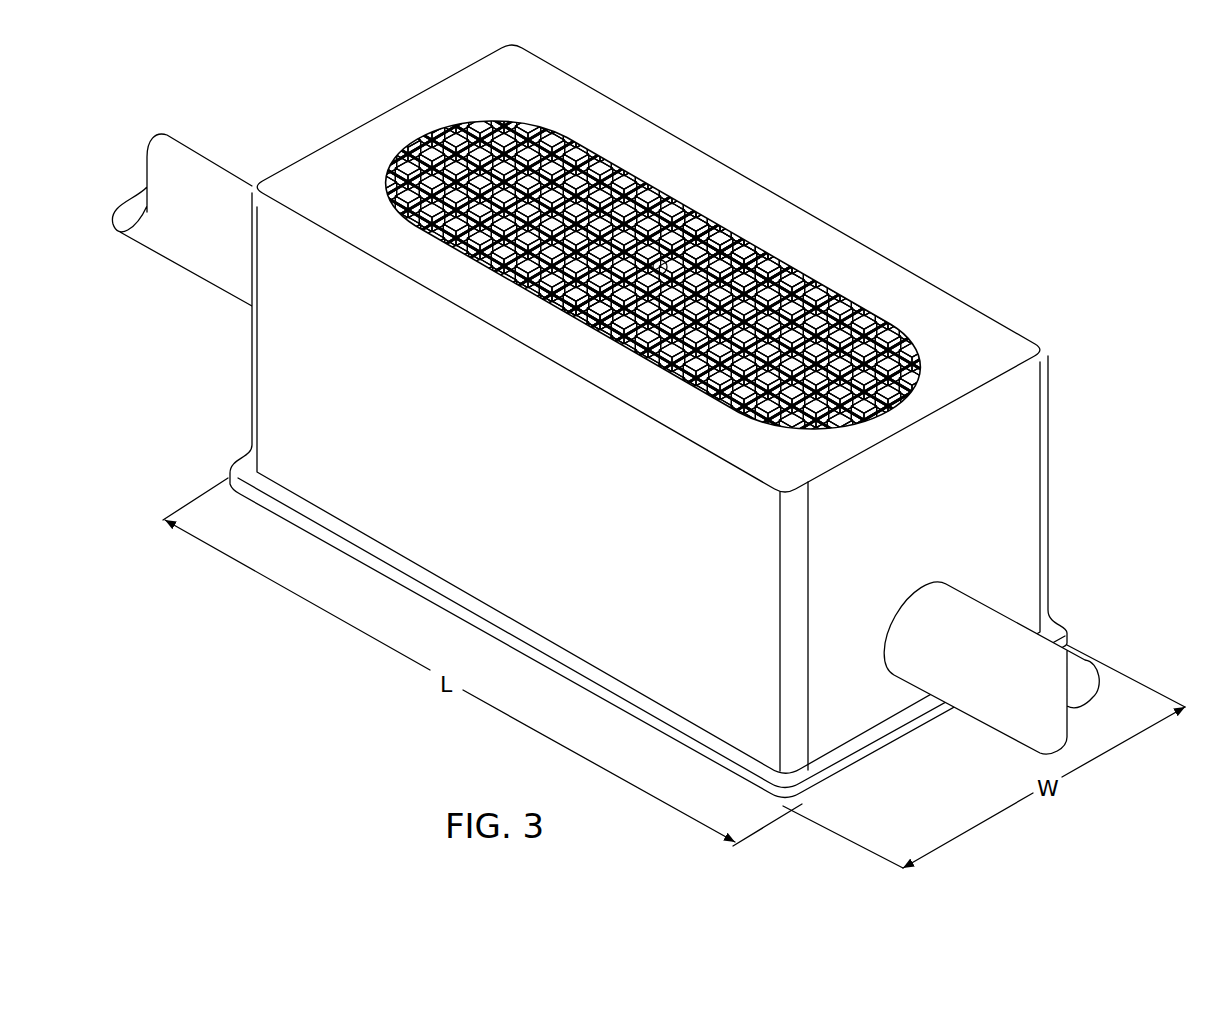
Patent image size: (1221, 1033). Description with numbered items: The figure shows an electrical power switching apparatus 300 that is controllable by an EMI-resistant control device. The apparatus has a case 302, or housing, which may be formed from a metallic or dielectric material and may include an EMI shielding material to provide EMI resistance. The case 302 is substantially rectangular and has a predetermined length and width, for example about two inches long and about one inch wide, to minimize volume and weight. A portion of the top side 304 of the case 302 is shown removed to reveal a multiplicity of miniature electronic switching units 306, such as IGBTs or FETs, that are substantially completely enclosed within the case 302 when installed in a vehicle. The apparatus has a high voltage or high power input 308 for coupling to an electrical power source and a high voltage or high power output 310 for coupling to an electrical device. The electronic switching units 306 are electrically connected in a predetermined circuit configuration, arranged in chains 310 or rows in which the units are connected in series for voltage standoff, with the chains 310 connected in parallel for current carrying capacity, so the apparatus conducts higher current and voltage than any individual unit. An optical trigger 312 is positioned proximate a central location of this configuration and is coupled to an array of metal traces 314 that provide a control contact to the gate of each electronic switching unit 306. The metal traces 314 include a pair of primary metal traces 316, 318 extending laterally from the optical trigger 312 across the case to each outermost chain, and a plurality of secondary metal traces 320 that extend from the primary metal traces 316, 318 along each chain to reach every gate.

The electrical power switching apparatus 300 is at (648, 419).
The case 302 is at (563, 76).
The top side 304 is at (995, 338).
The electronic switching units 306 is at (590, 157).
The input 308 is at (204, 158).
The output 310 is at (1000, 758).
The optical trigger 312 is at (663, 260).
The array of metal traces 314 is at (750, 249).
The primary metal trace 316 is at (585, 320).
The primary metal trace 318 is at (722, 230).
The secondary metal traces 320 is at (803, 276).